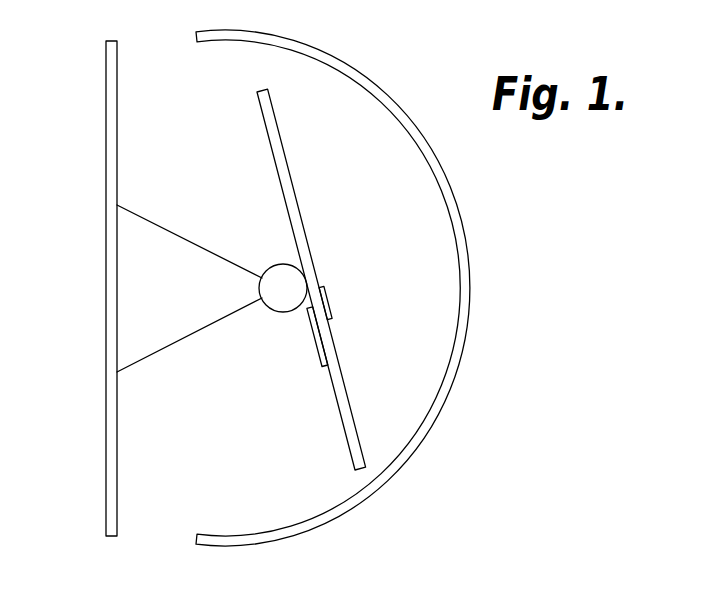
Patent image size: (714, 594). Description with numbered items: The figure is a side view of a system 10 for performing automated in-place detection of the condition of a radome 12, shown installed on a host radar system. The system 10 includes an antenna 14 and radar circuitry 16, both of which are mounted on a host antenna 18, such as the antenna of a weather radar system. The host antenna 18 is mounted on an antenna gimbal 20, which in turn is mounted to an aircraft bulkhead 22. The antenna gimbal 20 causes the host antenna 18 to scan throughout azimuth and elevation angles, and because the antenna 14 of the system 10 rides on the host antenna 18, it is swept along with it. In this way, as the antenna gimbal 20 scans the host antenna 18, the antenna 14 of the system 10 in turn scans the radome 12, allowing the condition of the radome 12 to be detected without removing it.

The system 10 is at (370, 366).
The radome 12 is at (410, 448).
The antenna 14 is at (328, 298).
The radar circuitry 16 is at (310, 335).
The host antenna 18 is at (298, 210).
The antenna gimbal 20 is at (165, 228).
The aircraft bulkhead 22 is at (112, 498).